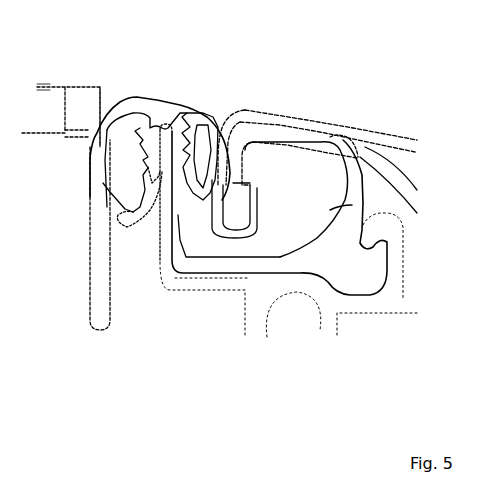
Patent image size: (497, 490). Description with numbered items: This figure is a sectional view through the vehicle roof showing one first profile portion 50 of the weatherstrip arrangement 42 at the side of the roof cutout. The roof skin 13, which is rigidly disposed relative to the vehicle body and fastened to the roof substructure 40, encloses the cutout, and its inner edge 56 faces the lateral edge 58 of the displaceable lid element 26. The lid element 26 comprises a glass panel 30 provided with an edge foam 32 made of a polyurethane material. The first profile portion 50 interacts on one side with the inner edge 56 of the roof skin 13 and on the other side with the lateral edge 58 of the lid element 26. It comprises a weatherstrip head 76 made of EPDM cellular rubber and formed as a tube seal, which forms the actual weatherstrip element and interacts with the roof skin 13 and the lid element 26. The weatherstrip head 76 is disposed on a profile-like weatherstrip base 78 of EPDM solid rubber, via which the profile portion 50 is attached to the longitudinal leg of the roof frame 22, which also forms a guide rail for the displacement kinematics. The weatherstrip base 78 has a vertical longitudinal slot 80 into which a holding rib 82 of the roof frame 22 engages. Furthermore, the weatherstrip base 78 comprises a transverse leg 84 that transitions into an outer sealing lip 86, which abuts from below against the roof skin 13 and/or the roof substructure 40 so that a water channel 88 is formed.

The roof skin 13 is at (307, 123).
The roof frame 22 is at (353, 316).
The lid element 26 is at (52, 85).
The glass panel 30 is at (33, 105).
The edge foam 32 is at (82, 124).
The roof substructure 40 is at (380, 160).
The weatherstrip arrangement 42 is at (177, 105).
The first profile portion 50 is at (198, 110).
The inner edge of roof skin 56 is at (235, 112).
The lateral edge of lid element 58 is at (105, 97).
The weatherstrip head 76 is at (133, 107).
The weatherstrip base 78 is at (213, 265).
The vertical longitudinal slot 80 is at (159, 178).
The holding rib 82 is at (162, 172).
The transverse leg 84 is at (252, 260).
The outer sealing lip 86 is at (351, 170).
The water channel 88 is at (290, 232).